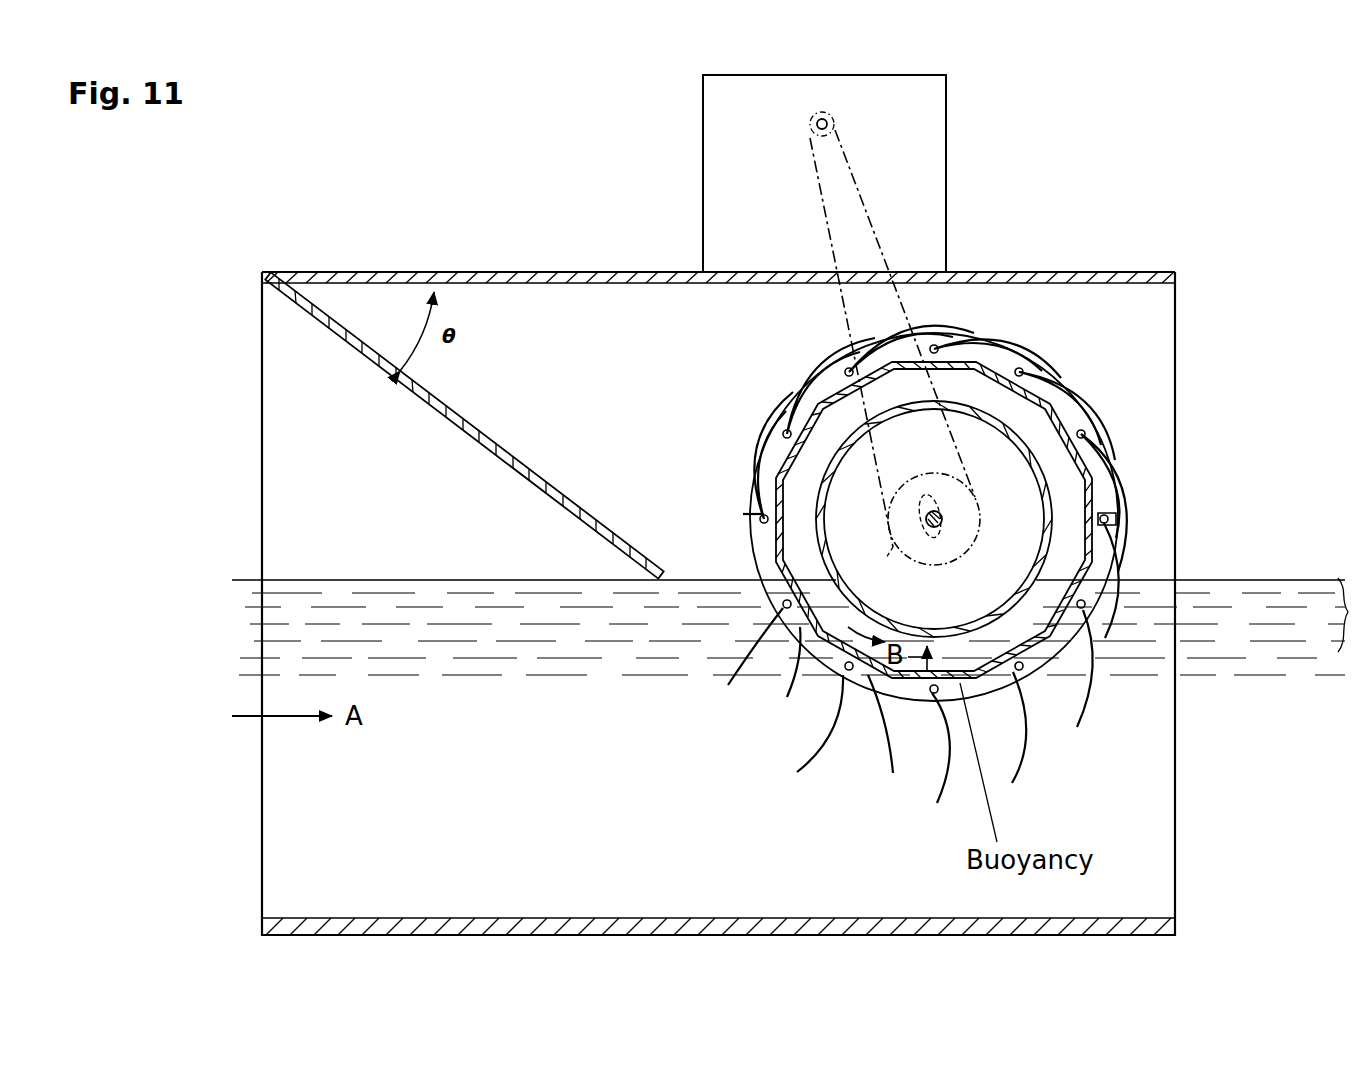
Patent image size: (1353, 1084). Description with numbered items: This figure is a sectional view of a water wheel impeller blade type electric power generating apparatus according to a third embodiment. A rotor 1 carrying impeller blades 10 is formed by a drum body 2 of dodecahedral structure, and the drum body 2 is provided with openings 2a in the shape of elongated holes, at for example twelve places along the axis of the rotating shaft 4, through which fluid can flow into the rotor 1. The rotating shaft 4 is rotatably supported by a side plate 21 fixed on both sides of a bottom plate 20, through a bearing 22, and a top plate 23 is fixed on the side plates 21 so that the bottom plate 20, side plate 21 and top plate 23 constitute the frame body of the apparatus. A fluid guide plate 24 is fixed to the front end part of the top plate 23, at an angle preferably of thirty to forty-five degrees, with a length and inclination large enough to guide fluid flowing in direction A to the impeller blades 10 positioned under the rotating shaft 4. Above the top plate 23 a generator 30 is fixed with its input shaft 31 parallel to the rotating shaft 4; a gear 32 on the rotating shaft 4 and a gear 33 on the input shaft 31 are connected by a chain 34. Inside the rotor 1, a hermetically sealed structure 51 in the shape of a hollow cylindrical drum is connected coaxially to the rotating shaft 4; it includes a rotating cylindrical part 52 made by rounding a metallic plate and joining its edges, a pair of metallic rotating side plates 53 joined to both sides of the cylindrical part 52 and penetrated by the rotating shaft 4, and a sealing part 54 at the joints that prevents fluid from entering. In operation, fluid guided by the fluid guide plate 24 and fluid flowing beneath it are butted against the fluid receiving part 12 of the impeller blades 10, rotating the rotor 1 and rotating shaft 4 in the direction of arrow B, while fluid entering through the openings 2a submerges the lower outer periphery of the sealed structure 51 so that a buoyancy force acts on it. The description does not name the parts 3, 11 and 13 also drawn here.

The rotor 1 is at (1102, 480).
The drum body 2 is at (934, 520).
The opening 2a is at (940, 356).
The outer ring 3 is at (1062, 403).
The rotating shaft 4 is at (942, 524).
The impeller blades 10 is at (716, 323).
The blade plate 11 is at (787, 405).
The fluid receiving part 12 is at (845, 758).
The water surface 13 is at (1105, 556).
The bottom plate 20 is at (548, 918).
The side plate 21 is at (628, 300).
The bearing 22 is at (979, 500).
The top plate 23 is at (548, 272).
The fluid guide plate 24 is at (490, 456).
The generator 30 is at (946, 160).
The input shaft 31 is at (815, 124).
The gear 32 is at (906, 535).
The gear 33 is at (808, 138).
The chain 34 is at (893, 228).
The hermetically sealed structure 51 is at (810, 522).
The rotating cylindrical part 52 is at (890, 412).
The rotating side plates 53 is at (856, 478).
The sealing part 54 is at (930, 538).